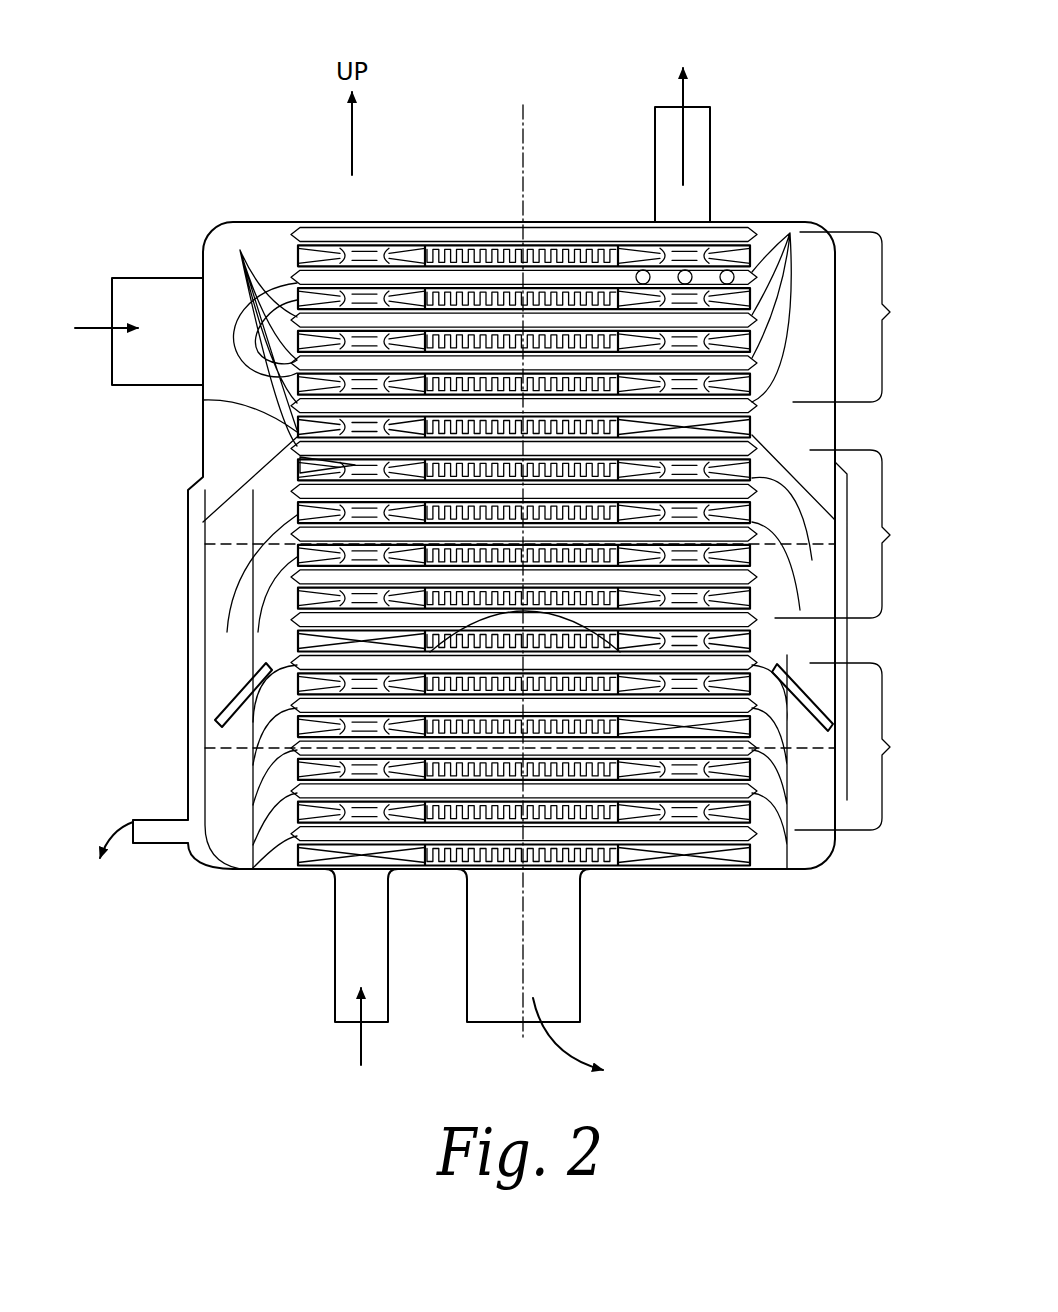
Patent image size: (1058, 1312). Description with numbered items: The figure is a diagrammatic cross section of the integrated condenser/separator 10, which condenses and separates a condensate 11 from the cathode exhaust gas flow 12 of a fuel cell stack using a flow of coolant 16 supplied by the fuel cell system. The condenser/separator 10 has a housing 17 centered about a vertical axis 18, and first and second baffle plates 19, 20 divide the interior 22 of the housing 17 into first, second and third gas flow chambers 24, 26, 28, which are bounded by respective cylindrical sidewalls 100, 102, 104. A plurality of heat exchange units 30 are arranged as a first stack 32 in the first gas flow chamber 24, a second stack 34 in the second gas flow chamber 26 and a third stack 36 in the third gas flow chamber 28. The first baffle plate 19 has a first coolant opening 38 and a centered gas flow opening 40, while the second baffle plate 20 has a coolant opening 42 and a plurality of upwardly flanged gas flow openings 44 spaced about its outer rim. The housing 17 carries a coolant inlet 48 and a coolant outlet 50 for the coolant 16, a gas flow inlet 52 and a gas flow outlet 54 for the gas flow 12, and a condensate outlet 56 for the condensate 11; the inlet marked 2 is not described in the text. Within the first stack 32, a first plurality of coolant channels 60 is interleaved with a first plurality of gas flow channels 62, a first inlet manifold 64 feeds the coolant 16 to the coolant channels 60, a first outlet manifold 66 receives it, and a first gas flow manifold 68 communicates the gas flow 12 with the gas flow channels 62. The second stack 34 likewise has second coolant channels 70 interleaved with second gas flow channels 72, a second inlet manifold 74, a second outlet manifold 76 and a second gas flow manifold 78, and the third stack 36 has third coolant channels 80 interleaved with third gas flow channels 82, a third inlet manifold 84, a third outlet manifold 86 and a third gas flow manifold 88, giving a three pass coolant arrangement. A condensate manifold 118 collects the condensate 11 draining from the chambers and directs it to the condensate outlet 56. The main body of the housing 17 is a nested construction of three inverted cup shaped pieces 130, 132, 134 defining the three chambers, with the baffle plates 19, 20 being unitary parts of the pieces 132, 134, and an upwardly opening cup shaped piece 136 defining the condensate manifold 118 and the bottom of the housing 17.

The condenser/separator 10 is at (437, 76).
The coolant 16 is at (692, 78).
The coolant outlet 50 is at (705, 150).
The first plurality of gas flow channels 62 is at (290, 290).
The interior 22 is at (248, 238).
The first inlet manifold 64 is at (350, 243).
The vertical axis 18 is at (530, 180).
The first gas flow manifold 68 is at (485, 222).
The housing 17 is at (213, 226).
The heat exchange units 30 is at (285, 245).
The second gas flow manifold 78 is at (545, 455).
The first outlet manifold 66 is at (688, 242).
The first plurality of coolant channels 60 is at (792, 235).
The inverted cup shaped piece 130 is at (812, 235).
The cylindrical sidewall 100 is at (205, 272).
The gas flow inlet 52 is at (158, 290).
The inlet flow 2 is at (106, 293).
The second outlet manifold 76 is at (213, 410).
The first gas flow chamber 24 is at (290, 440).
The first baffle plate 19 is at (297, 464).
The first coolant opening 38 is at (297, 470).
The second plurality of gas flow channels 72 is at (380, 500).
The gas flow opening 40 is at (297, 497).
The inverted cup shaped piece 132 is at (212, 548).
The second gas flow chamber 26 is at (213, 577).
The cylindrical sidewall 102 is at (232, 600).
The second baffle plate 20 is at (380, 660).
The condensate manifold 118 is at (186, 683).
The gas flow openings 44 is at (255, 682).
The inverted cup shaped piece 134 is at (215, 757).
The third gas flow chamber 28 is at (213, 785).
The cylindrical sidewall 104 is at (210, 805).
The condensate 11 is at (105, 865).
The condensate outlet 56 is at (160, 845).
The upwardly opening cup shaped piece 136 is at (205, 870).
The third plurality of gas flow channels 82 is at (265, 866).
The third inlet manifold 84 is at (357, 848).
The coolant inlet 48 is at (336, 968).
The third gas flow manifold 88 is at (505, 872).
The gas flow outlet 54 is at (582, 955).
The cathode exhaust gas flow 12 is at (590, 1045).
The third outlet manifold 86 is at (680, 815).
The third plurality of coolant channels 80 is at (788, 866).
The first stack 32 is at (858, 317).
The second stack 34 is at (849, 534).
The third stack 36 is at (859, 746).
The second inlet manifold 74 is at (800, 405).
The second plurality of coolant channels 70 is at (755, 455).
The coolant opening 42 is at (720, 655).